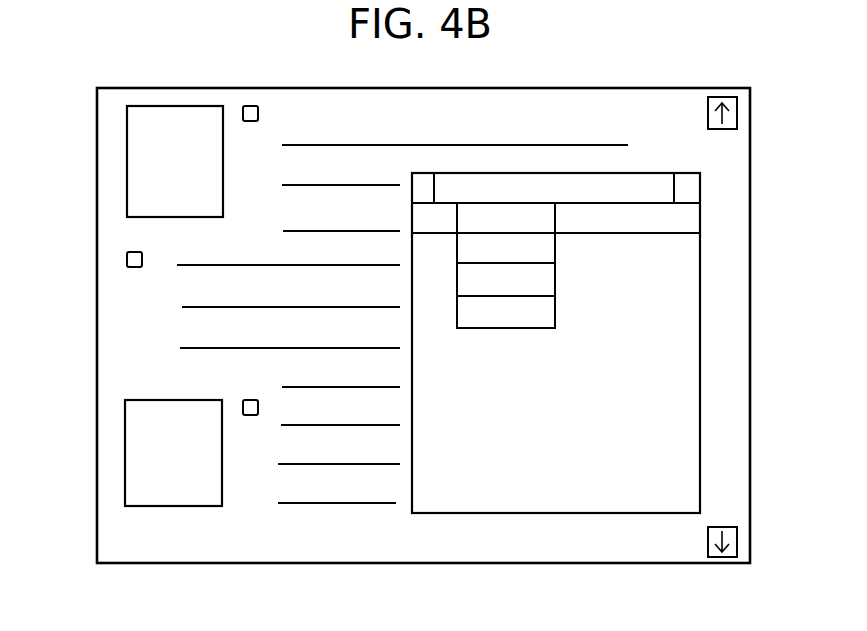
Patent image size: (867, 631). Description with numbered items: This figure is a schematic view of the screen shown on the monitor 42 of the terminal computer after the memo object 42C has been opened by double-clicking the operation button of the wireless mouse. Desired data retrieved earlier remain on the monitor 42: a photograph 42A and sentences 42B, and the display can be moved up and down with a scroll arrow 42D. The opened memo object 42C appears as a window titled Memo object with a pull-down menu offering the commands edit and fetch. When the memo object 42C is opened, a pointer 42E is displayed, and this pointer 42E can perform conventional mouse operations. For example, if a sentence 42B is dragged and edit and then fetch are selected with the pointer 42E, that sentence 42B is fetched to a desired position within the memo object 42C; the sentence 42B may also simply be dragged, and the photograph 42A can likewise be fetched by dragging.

The monitor 42 is at (532, 88).
The photograph 42A is at (127, 173).
The sentences 42B is at (258, 113).
The memo object 42C is at (702, 335).
The scroll arrow 42D is at (708, 108).
The pointer 42E is at (562, 265).